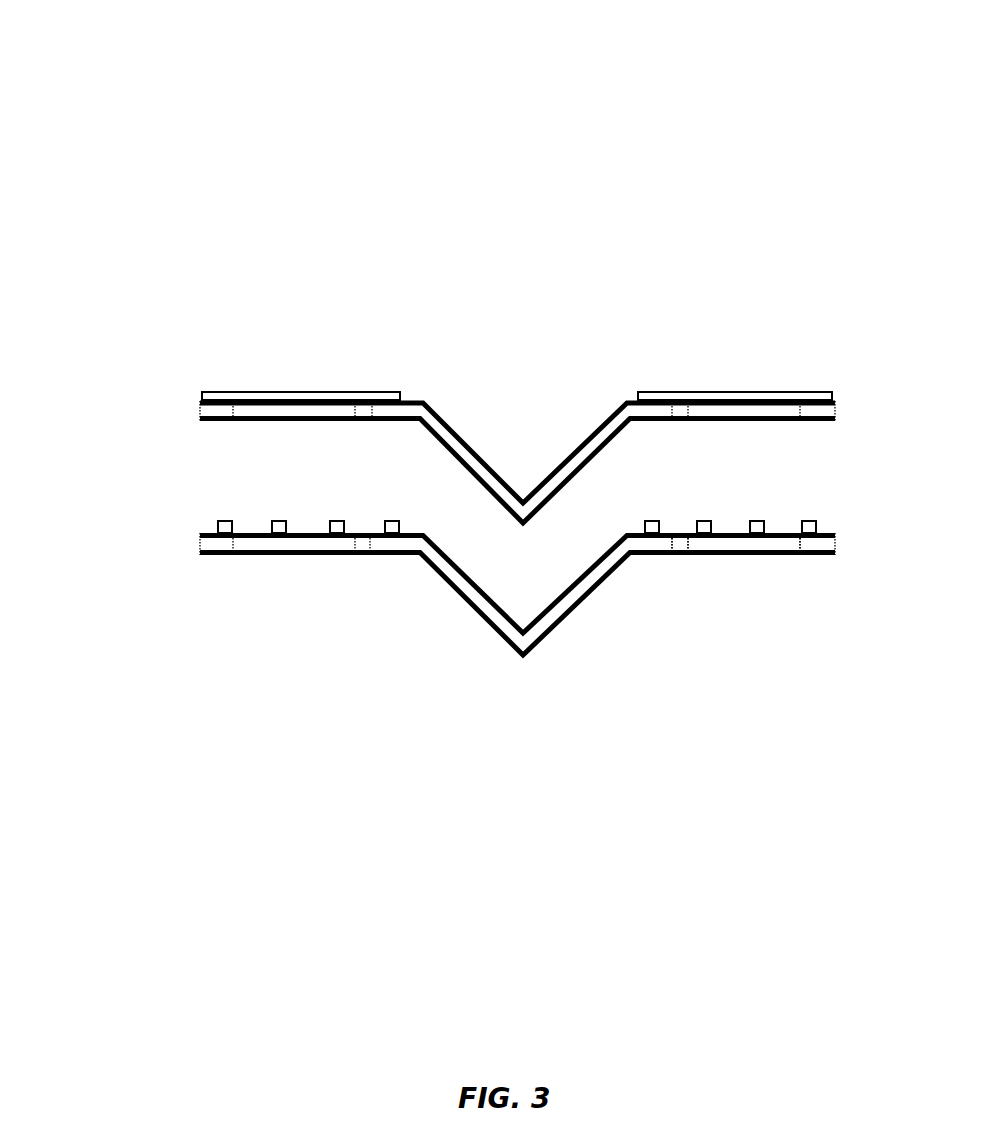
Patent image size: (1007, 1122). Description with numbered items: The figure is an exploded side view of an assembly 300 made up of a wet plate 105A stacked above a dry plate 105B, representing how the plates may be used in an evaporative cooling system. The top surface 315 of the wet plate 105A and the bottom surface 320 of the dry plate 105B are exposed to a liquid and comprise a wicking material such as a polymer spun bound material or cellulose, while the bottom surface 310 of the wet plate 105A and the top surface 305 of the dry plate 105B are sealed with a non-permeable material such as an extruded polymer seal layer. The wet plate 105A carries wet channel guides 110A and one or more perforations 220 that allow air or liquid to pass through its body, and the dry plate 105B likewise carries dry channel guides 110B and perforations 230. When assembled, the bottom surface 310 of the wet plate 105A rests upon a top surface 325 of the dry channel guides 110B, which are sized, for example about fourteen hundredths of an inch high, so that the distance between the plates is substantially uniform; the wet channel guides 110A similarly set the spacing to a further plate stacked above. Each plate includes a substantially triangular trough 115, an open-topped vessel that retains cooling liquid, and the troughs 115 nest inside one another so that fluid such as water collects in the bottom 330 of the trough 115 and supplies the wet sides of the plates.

The assembly 300 is at (166, 71).
The wet plate 105A is at (211, 410).
The dry plate 105B is at (212, 556).
The wet channel guides 110A is at (285, 374).
The dry channel guides 110B is at (285, 535).
The trough 115 is at (589, 383).
The perforations 220 is at (680, 402).
The perforations 230 is at (682, 545).
The top surface of the dry plate 305 is at (781, 529).
The bottom surface of the wet plate 310 is at (230, 424).
The top surface of the wet plate 315 is at (780, 394).
The bottom surface of the dry plate 320 is at (789, 557).
The top surface of the dry channel guides 325 is at (333, 518).
The bottom of the trough 330 is at (525, 601).